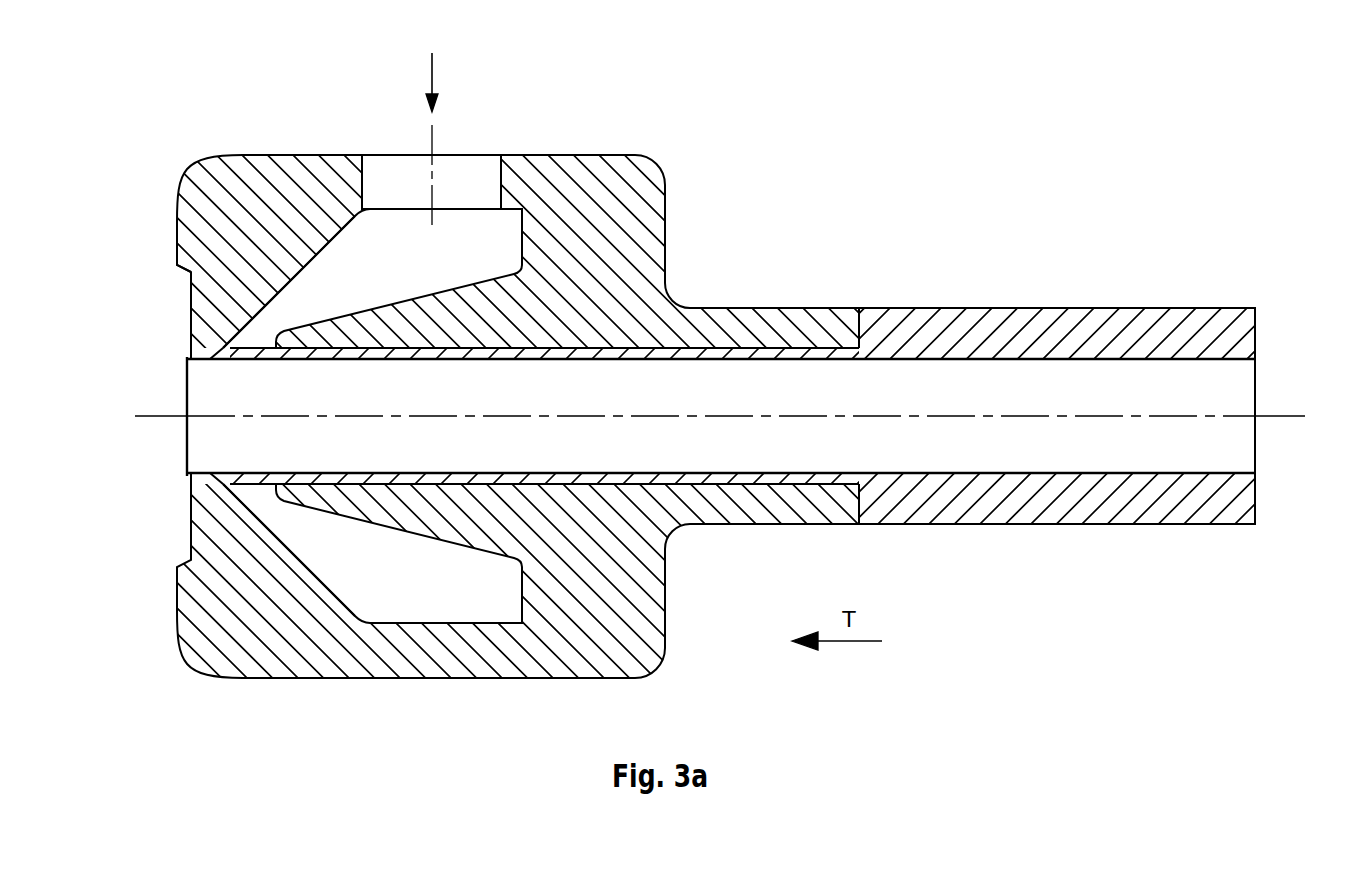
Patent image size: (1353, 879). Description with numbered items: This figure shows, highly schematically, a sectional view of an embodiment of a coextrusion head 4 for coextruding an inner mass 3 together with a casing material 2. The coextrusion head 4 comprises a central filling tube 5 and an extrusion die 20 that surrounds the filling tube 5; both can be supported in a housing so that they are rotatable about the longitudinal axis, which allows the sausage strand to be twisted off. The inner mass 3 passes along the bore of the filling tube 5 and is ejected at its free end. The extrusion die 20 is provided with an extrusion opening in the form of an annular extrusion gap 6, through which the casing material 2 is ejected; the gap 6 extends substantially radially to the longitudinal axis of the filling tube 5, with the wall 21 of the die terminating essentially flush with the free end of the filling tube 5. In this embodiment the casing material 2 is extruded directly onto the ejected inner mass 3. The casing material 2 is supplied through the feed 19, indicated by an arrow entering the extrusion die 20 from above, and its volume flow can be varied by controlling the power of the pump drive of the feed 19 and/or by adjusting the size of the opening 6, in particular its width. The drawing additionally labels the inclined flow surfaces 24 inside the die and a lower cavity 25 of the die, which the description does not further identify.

The casing material 2 is at (392, 262).
The inner mass 3 is at (917, 395).
The coextrusion head 4 is at (907, 162).
The filling tube 5 is at (190, 478).
The annular extrusion gap 6 is at (190, 356).
The feed 19 is at (434, 74).
The extrusion die 20 is at (188, 275).
The wall 21 is at (190, 318).
The inclined cavity wall 24 is at (282, 293).
The lower cavity 25 is at (388, 589).